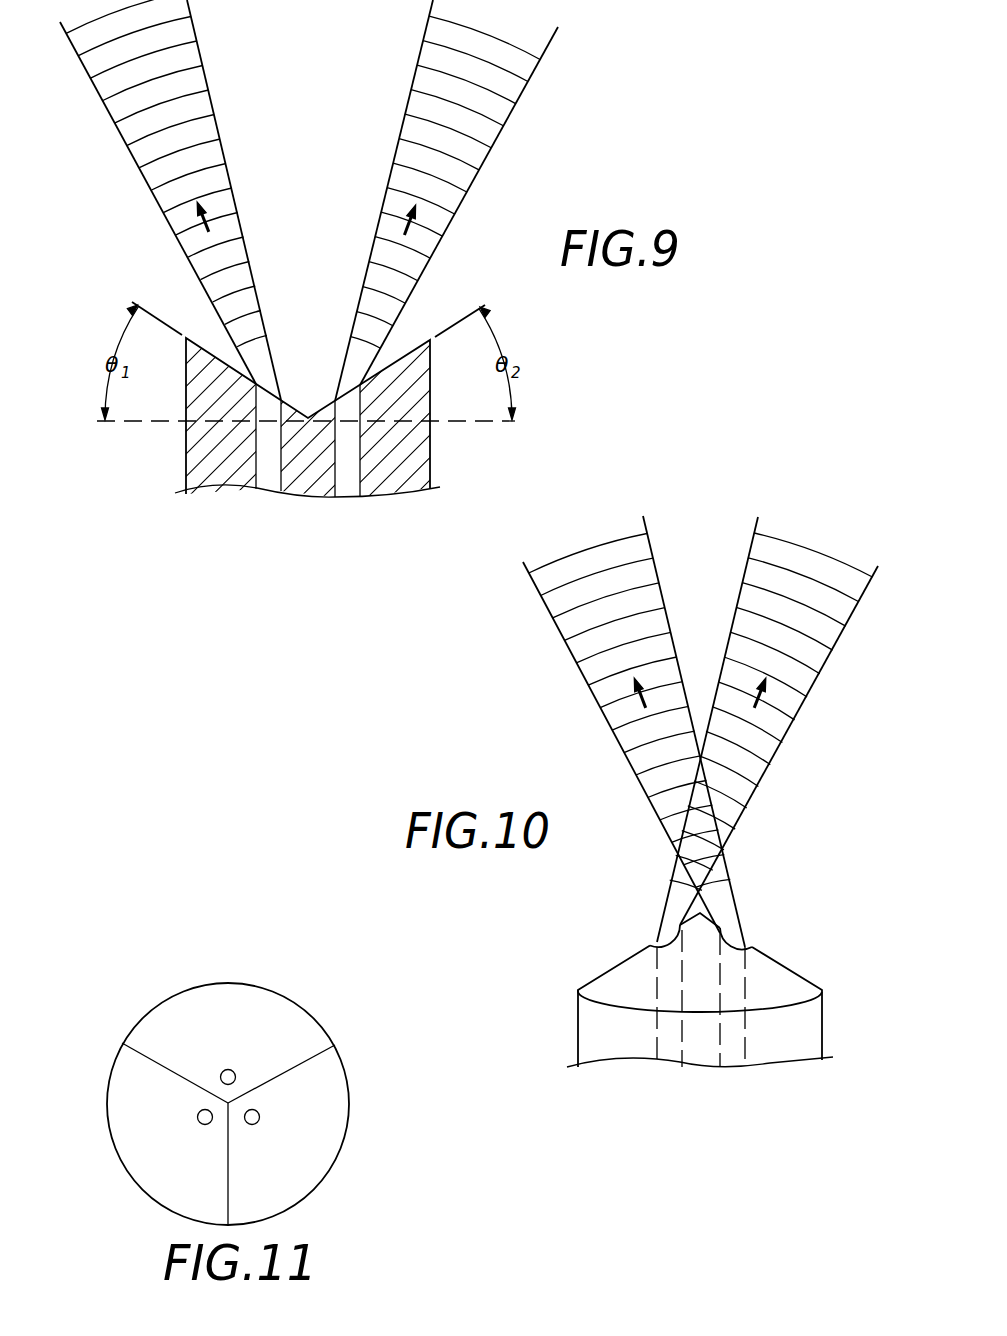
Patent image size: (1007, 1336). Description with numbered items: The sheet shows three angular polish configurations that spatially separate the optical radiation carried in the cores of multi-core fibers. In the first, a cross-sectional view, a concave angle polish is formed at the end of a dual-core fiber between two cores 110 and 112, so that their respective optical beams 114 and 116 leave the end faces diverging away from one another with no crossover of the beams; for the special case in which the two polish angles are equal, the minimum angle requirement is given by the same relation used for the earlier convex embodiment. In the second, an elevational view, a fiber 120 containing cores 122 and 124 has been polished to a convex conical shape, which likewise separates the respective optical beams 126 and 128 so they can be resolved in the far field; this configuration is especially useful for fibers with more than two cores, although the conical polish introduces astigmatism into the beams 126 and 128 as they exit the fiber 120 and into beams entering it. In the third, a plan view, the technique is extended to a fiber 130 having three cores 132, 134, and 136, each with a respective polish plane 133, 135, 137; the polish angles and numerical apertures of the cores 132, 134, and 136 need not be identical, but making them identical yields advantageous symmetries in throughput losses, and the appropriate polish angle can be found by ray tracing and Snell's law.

In FIG. 9, the core 110 is at (268, 476).
In FIG. 9, the core 112 is at (343, 481).
In FIG. 9, the optical beam 114 is at (145, 126).
In FIG. 9, the optical beam 116 is at (481, 104).
In FIG. 10, the fiber 120 is at (578, 1015).
In FIG. 10, the core 122 is at (668, 1047).
In FIG. 10, the core 124 is at (730, 1055).
In FIG. 10, the optical beam 126 is at (805, 643).
In FIG. 10, the optical beam 128 is at (608, 665).
In FIG. 11, the fiber 130 is at (239, 1074).
In FIG. 11, the core 132 is at (222, 1071).
In FIG. 11, the polish plane 133 is at (253, 1005).
In FIG. 11, the core 134 is at (262, 1117).
In FIG. 11, the polish plane 135 is at (330, 1093).
In FIG. 11, the core 136 is at (197, 1118).
In FIG. 11, the polish plane 137 is at (163, 1182).